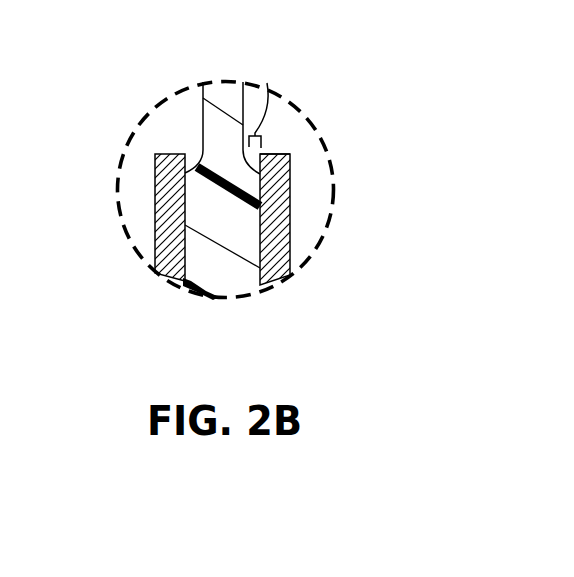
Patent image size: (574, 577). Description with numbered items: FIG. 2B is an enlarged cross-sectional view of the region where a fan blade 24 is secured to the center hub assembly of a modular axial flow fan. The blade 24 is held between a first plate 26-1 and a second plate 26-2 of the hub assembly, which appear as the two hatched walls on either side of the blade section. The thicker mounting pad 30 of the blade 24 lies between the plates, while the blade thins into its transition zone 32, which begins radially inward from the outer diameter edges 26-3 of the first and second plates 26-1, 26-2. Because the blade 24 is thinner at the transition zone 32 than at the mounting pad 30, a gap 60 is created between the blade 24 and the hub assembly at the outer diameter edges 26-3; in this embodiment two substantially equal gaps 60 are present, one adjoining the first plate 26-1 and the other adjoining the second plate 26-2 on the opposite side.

The blade 24 is at (251, 304).
The first plate 26-1 is at (290, 202).
The second plate 26-2 is at (165, 206).
The outer diameter edges 26-3 is at (282, 153).
The mounting pad 30 is at (242, 249).
The transition zone 32 is at (223, 100).
The gap 60 is at (265, 103).